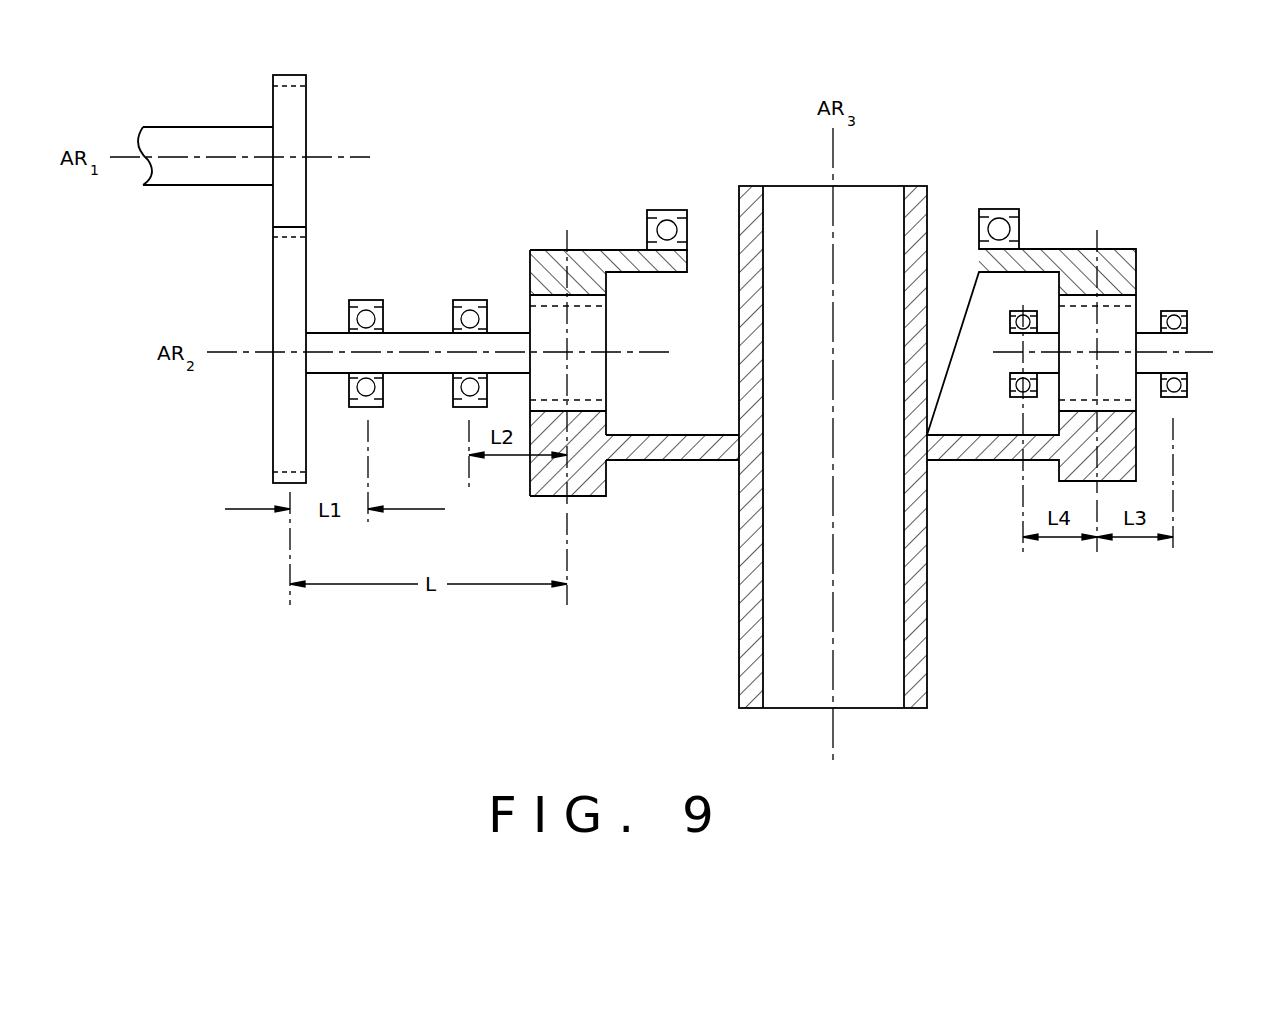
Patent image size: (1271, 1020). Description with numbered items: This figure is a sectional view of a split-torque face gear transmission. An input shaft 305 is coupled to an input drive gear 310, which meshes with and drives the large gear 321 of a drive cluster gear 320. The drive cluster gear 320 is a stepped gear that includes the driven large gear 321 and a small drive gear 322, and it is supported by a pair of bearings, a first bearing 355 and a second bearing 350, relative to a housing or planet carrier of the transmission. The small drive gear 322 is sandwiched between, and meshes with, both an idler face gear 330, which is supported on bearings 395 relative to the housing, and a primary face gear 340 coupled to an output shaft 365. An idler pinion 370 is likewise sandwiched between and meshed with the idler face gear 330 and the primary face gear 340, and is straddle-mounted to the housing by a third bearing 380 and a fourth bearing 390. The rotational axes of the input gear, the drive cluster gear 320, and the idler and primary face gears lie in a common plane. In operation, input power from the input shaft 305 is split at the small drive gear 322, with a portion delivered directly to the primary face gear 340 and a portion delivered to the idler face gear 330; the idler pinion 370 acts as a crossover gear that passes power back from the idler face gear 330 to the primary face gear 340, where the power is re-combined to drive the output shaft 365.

The input shaft 305 is at (165, 145).
The input drive gear 310 is at (306, 82).
The large gear 321 is at (288, 417).
The drive cluster gear 320 is at (429, 322).
The first bearing 355 is at (357, 300).
The second bearing 350 is at (477, 300).
The idler face gear 330 is at (541, 255).
The small drive gear 322 is at (596, 333).
The primary face gear 340 is at (600, 496).
The output shaft 365 is at (927, 692).
The idler pinion 370 is at (1122, 316).
The bearings 395 is at (1019, 210).
The fourth bearing 390 is at (1013, 314).
The third bearing 380 is at (1175, 310).